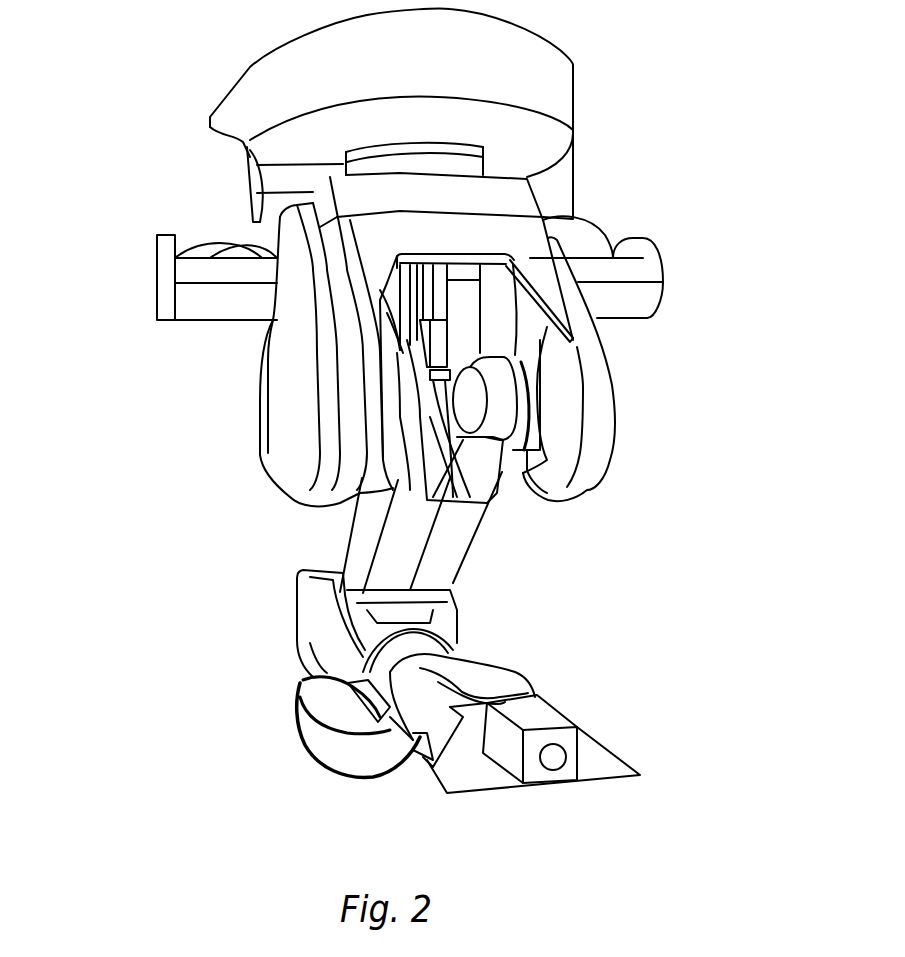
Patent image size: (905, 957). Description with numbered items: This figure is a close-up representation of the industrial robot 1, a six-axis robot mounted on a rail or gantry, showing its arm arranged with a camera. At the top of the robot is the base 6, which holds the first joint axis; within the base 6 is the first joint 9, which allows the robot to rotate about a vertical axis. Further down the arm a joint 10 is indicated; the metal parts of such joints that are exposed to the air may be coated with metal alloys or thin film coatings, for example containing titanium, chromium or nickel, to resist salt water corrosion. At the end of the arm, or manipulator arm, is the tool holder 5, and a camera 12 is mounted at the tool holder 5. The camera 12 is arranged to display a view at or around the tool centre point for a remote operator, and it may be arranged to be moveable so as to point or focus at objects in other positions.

The industrial robot 1 is at (700, 193).
The tool holder 5 is at (532, 680).
The base 6 is at (271, 76).
The first joint 9 is at (400, 165).
The joint 10 is at (385, 480).
The camera 12 is at (605, 750).